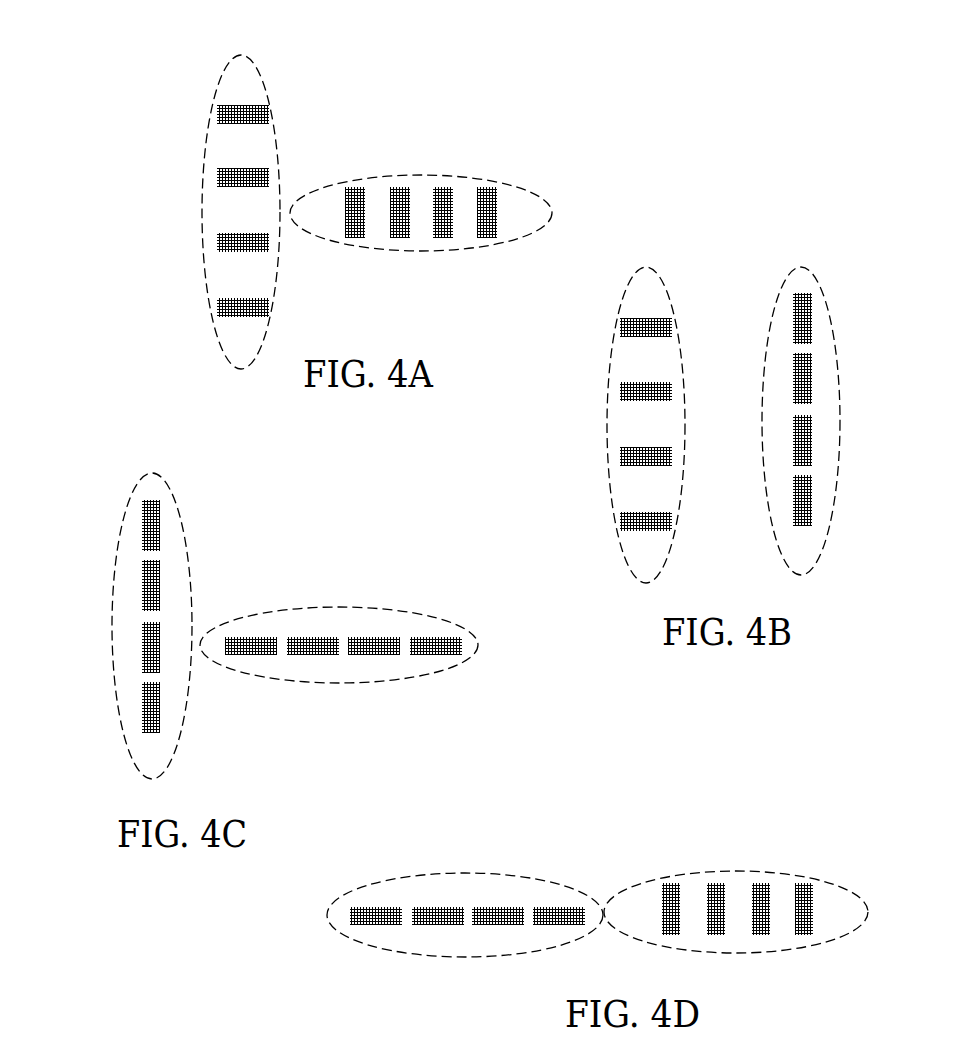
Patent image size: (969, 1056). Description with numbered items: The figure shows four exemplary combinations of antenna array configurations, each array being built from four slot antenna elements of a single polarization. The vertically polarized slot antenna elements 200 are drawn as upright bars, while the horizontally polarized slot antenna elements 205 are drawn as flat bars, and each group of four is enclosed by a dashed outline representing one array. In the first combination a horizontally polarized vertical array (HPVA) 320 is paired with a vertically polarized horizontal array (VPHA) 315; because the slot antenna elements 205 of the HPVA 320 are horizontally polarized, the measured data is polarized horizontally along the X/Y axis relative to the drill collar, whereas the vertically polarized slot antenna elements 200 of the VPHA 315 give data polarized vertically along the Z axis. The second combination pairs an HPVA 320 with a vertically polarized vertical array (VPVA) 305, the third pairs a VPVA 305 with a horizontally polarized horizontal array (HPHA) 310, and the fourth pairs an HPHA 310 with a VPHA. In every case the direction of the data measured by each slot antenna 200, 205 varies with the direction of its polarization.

In FIG. 4A, the vertically polarized slot antenna element 200 is at (418, 197).
In FIG. 4B, the vertically polarized slot antenna element 200 is at (815, 443).
In FIG. 4C, the vertically polarized slot antenna element 200 is at (137, 613).
In FIG. 4D, the vertically polarized slot antenna element 200 is at (725, 893).
In FIG. 4A, the horizontally polarized slot antenna element 205 is at (217, 215).
In FIG. 4B, the horizontally polarized slot antenna element 205 is at (630, 432).
In FIG. 4C, the horizontally polarized slot antenna element 205 is at (342, 673).
In FIG. 4D, the horizontally polarized slot antenna element 205 is at (435, 932).
In FIG. 4B, the vertically polarized vertical array (VPVA) 305 is at (822, 300).
In FIG. 4C, the vertically polarized vertical array (VPVA) 305 is at (177, 503).
In FIG. 4C, the horizontally polarized horizontal array (HPHA) 310 is at (420, 613).
In FIG. 4D, the horizontally polarized horizontal array (HPHA) 310 is at (802, 878).
In FIG. 4A, the vertically polarized horizontal array (VPHA) 315 is at (487, 183).
In FIG. 4A, the horizontally polarized vertical array (HPVA) 320 is at (264, 82).
In FIG. 4B, the horizontally polarized vertical array (HPVA) 320 is at (663, 293).
In FIG. 4D, the horizontally polarized vertical array (HPVA) 320 is at (548, 885).